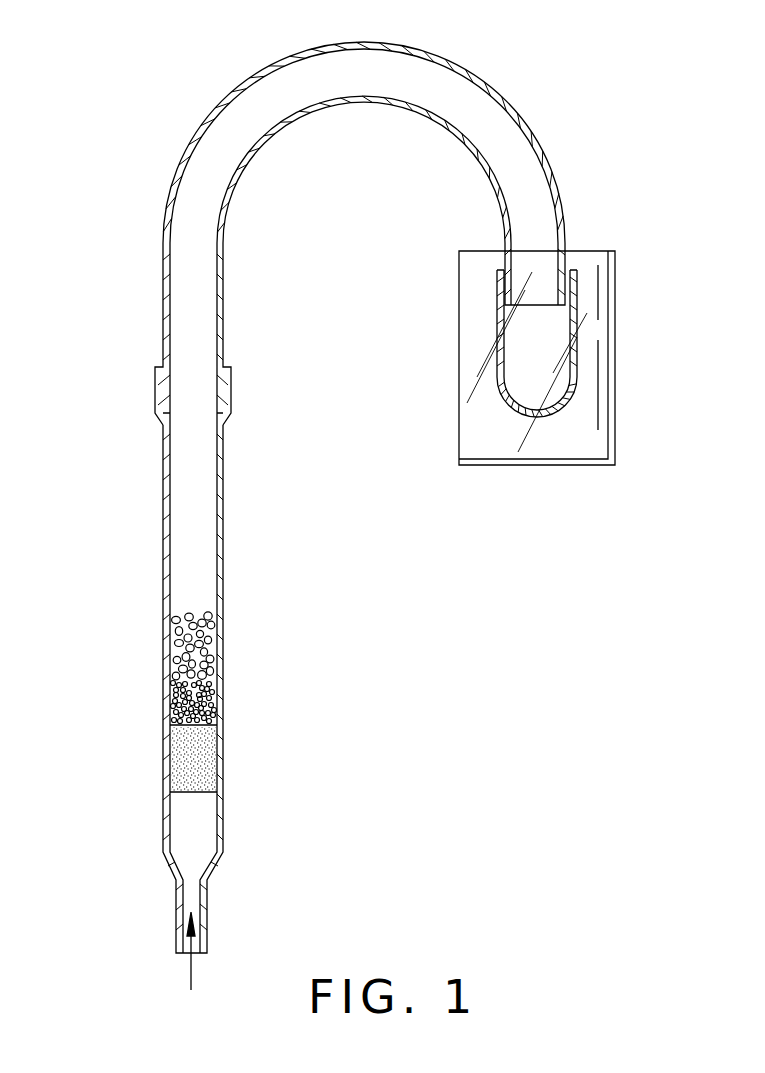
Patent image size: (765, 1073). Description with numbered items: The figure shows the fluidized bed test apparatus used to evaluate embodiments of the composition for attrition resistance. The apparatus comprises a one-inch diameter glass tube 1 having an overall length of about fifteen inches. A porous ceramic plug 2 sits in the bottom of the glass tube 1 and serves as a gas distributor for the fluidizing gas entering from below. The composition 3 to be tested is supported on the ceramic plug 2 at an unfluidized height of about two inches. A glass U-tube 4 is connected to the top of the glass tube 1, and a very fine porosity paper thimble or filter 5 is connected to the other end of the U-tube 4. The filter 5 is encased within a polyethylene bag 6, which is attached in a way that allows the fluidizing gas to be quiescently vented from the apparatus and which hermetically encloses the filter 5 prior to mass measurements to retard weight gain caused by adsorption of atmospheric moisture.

The glass tube 1 is at (163, 508).
The porous ceramic plug 2 is at (172, 762).
The composition 3 is at (210, 682).
The glass U-tube 4 is at (163, 313).
The paper thimble or filter 5 is at (497, 349).
The polyethylene bag 6 is at (505, 465).